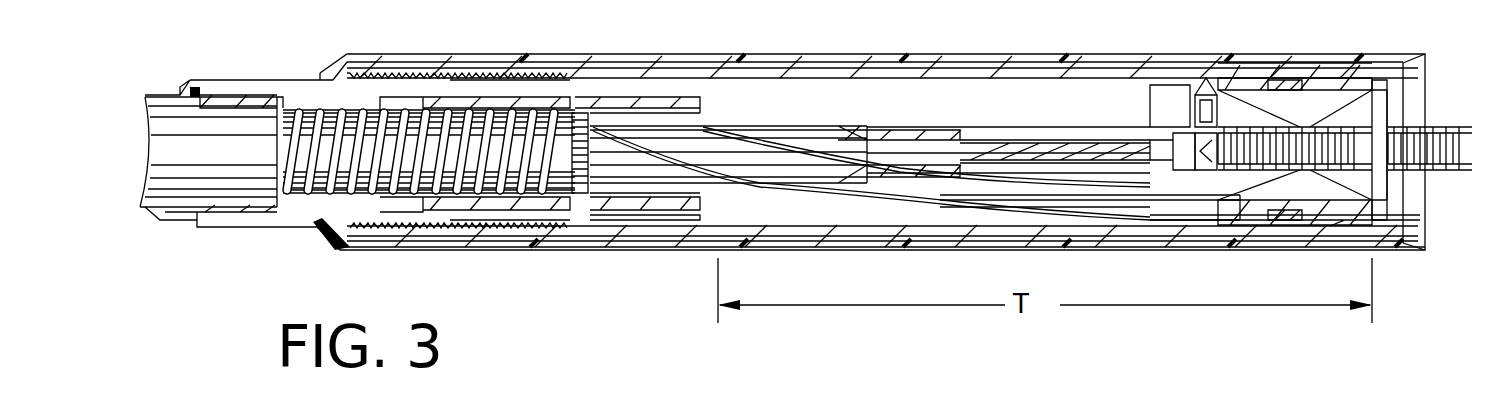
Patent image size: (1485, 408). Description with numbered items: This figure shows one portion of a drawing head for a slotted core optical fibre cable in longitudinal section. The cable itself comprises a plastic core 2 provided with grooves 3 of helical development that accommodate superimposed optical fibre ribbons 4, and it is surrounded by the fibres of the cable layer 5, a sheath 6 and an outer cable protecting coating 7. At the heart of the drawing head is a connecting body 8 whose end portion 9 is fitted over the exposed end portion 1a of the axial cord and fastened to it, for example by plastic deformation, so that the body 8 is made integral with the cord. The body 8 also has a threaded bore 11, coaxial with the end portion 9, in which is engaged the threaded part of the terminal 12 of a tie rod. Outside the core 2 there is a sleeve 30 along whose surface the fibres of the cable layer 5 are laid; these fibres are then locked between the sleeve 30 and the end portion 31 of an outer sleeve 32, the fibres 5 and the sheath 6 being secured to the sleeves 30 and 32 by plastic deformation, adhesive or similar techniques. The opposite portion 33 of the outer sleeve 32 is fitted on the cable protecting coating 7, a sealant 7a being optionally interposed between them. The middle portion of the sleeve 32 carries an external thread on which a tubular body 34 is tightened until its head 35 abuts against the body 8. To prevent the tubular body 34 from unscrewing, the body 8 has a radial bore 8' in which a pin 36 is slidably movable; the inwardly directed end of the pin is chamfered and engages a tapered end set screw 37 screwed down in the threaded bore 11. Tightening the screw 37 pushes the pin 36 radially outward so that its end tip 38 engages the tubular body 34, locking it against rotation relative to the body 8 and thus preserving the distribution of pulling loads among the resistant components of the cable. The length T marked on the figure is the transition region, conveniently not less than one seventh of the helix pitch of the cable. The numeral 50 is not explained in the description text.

The end portion of the cord 1a is at (923, 137).
The core 2 is at (817, 127).
The grooves 3 is at (827, 183).
The optical fibre ribbons 4 is at (937, 200).
The fibres of the cable layer 5 is at (705, 118).
The sheath 6 is at (418, 122).
The cable protecting coating 7 is at (165, 140).
The sealant 7a is at (237, 102).
The connecting body 8 is at (1146, 127).
The radial bore 8' is at (1211, 96).
The end portion of the connecting body 9 is at (993, 130).
The threaded bore 11 is at (1342, 170).
The terminal 12 is at (1462, 127).
The sleeve 30 is at (747, 190).
The end portion of outer sleeve 31 is at (703, 202).
The outer sleeve 32 is at (417, 213).
The opposite portion of the outer sleeve 33 is at (307, 97).
The tubular body 34 is at (620, 35).
The head 35 is at (1412, 227).
The pin 36 is at (1225, 87).
The set screw 37 is at (1248, 170).
The end tip 38 is at (1206, 78).
The insert 50 is at (1288, 83).